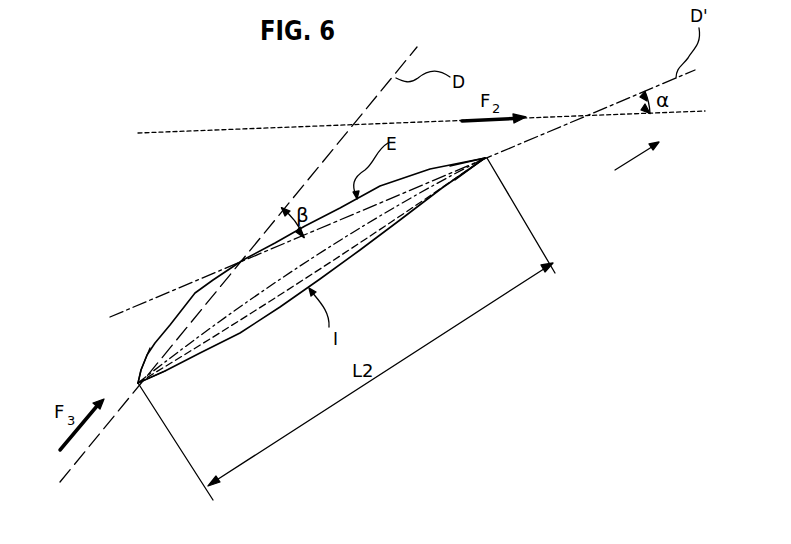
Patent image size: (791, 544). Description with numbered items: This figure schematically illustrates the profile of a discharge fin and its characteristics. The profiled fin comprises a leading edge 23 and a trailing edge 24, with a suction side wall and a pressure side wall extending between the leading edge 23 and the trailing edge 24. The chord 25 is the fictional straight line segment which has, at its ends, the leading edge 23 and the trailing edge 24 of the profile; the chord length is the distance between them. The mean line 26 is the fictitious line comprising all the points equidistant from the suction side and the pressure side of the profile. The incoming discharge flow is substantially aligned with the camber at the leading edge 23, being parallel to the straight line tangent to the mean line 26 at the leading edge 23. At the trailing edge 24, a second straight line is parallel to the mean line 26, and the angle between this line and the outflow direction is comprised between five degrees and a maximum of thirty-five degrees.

The leading edge 23 is at (134, 384).
The trailing edge 24 is at (493, 159).
The chord 25 is at (228, 331).
The mean line 26 is at (335, 247).